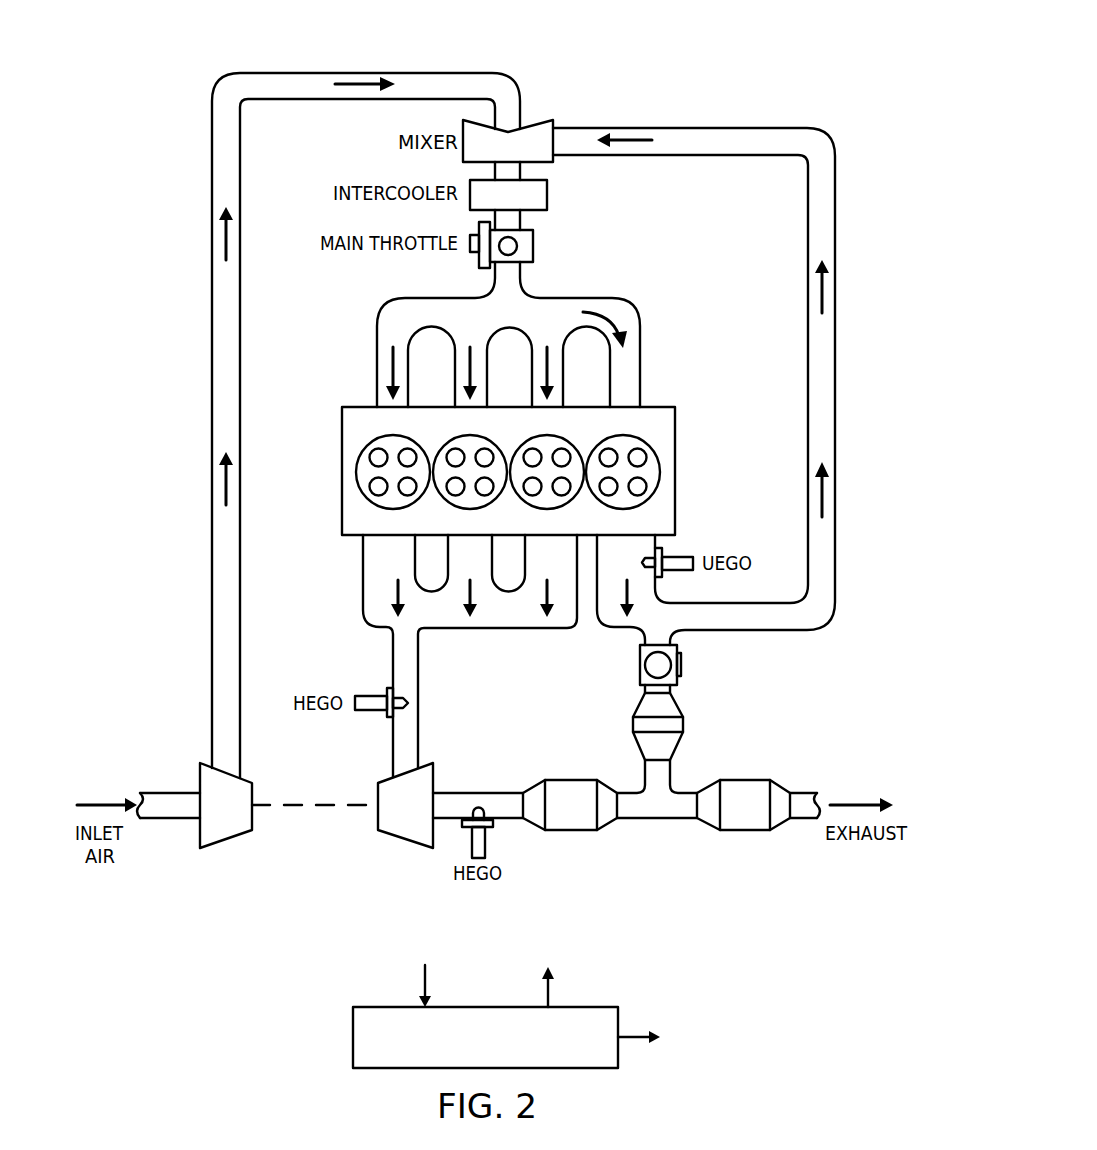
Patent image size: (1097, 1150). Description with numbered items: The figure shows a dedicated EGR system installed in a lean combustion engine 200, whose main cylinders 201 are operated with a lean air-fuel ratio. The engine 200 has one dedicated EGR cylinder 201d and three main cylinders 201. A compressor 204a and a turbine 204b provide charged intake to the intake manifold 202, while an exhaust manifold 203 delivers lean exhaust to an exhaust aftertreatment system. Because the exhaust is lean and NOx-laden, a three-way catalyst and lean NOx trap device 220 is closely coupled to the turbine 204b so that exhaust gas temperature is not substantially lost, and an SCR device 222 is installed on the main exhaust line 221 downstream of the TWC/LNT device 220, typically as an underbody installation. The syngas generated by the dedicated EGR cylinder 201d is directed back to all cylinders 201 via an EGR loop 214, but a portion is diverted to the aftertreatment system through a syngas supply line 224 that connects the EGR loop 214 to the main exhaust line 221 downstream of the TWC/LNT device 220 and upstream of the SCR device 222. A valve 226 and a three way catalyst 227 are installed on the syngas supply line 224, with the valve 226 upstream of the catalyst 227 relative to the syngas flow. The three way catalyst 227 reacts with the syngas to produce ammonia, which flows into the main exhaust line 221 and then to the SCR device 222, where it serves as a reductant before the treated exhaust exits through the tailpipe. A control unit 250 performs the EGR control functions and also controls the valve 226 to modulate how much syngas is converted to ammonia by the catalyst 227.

The lean combustion engine 200 is at (716, 62).
The main cylinders 201 is at (336, 478).
The dedicated EGR cylinder 201d is at (658, 480).
The intake manifold 202 is at (593, 295).
The exhaust manifold 203 is at (488, 630).
The compressor 204a is at (225, 840).
The turbine 204b is at (403, 840).
The EGR loop 214 is at (837, 372).
The TWC/LNT device 220 is at (570, 832).
The main exhaust line 221 is at (658, 820).
The SCR device 222 is at (743, 832).
The syngas supply line 224 is at (643, 775).
The valve 226 is at (682, 665).
The three way catalyst 227 is at (685, 725).
The control unit 250 is at (353, 1045).